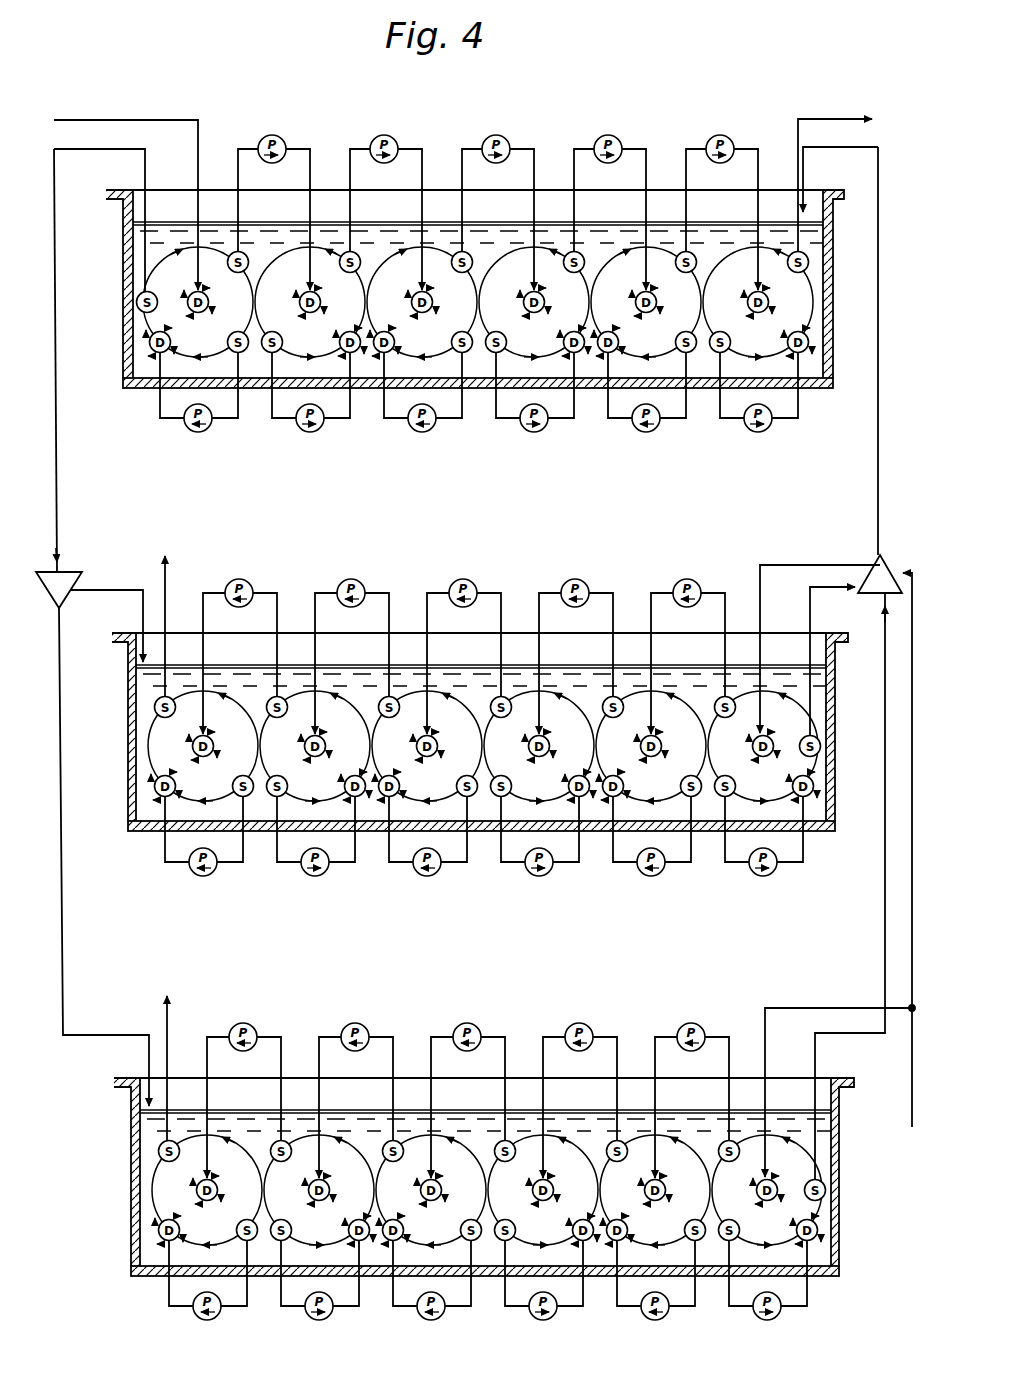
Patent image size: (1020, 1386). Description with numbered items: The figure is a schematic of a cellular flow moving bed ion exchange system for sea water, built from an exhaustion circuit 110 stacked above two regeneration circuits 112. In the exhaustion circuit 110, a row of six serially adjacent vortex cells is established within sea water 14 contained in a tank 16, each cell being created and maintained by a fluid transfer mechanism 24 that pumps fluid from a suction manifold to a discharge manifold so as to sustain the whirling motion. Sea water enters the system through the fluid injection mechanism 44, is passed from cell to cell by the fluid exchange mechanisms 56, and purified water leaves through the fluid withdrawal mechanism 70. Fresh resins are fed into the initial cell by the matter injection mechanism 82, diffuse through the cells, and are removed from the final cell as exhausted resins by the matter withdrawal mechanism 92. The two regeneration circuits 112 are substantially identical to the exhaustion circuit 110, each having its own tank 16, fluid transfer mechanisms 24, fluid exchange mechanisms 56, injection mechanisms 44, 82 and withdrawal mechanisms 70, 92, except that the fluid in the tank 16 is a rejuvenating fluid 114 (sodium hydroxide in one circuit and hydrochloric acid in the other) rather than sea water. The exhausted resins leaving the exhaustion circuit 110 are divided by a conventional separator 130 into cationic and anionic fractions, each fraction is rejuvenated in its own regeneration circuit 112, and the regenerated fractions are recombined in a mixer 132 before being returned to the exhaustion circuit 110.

The sea water 14 is at (489, 379).
The tank 16 is at (122, 379).
The fluid transfer mechanism 24 is at (180, 430).
The fluid injection mechanism 44 is at (200, 134).
The fluid exchange mechanism 56 is at (278, 137).
The fluid withdrawal mechanism 70 is at (858, 118).
The matter injection mechanism 82 is at (827, 136).
The matter withdrawal mechanism 92 is at (135, 147).
The exhaustion circuit 110 is at (592, 107).
The regeneration circuit 112 is at (607, 549).
The rejuvenating fluid 114 is at (496, 822).
The separator 130 is at (67, 557).
The mixer 132 is at (877, 561).